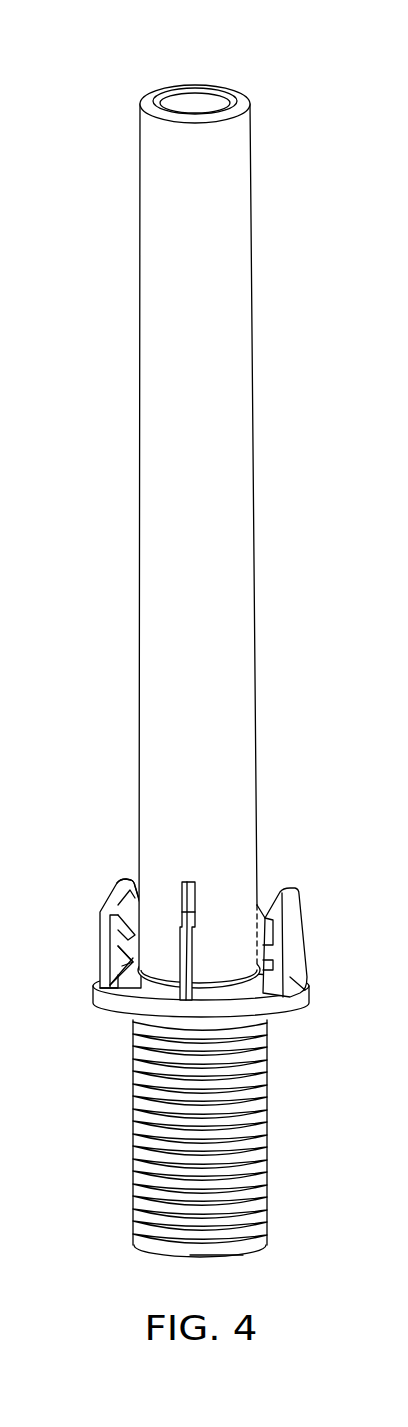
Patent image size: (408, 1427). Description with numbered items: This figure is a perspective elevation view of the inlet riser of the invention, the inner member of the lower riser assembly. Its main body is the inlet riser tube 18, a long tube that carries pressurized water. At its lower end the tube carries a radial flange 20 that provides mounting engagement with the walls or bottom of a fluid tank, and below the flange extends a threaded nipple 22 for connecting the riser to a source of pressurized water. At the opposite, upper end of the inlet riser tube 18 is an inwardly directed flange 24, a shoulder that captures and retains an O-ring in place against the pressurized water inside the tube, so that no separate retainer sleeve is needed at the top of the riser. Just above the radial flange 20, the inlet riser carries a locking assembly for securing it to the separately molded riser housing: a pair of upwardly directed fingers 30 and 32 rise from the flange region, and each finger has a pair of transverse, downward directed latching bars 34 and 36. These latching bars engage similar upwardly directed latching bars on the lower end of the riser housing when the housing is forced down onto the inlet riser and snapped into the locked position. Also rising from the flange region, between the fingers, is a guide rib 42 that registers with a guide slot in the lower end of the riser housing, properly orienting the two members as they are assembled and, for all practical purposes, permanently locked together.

The inlet riser tube 18 is at (147, 440).
The radial flange 20 is at (108, 1004).
The threaded nipple 22 is at (132, 1177).
The inwardly directed flange 24 is at (227, 93).
The upwardly directed finger 30 is at (100, 917).
The upwardly directed finger 32 is at (300, 905).
The latching bar 34 is at (126, 895).
The latching bar 36 is at (270, 917).
The guide rib 42 is at (197, 910).